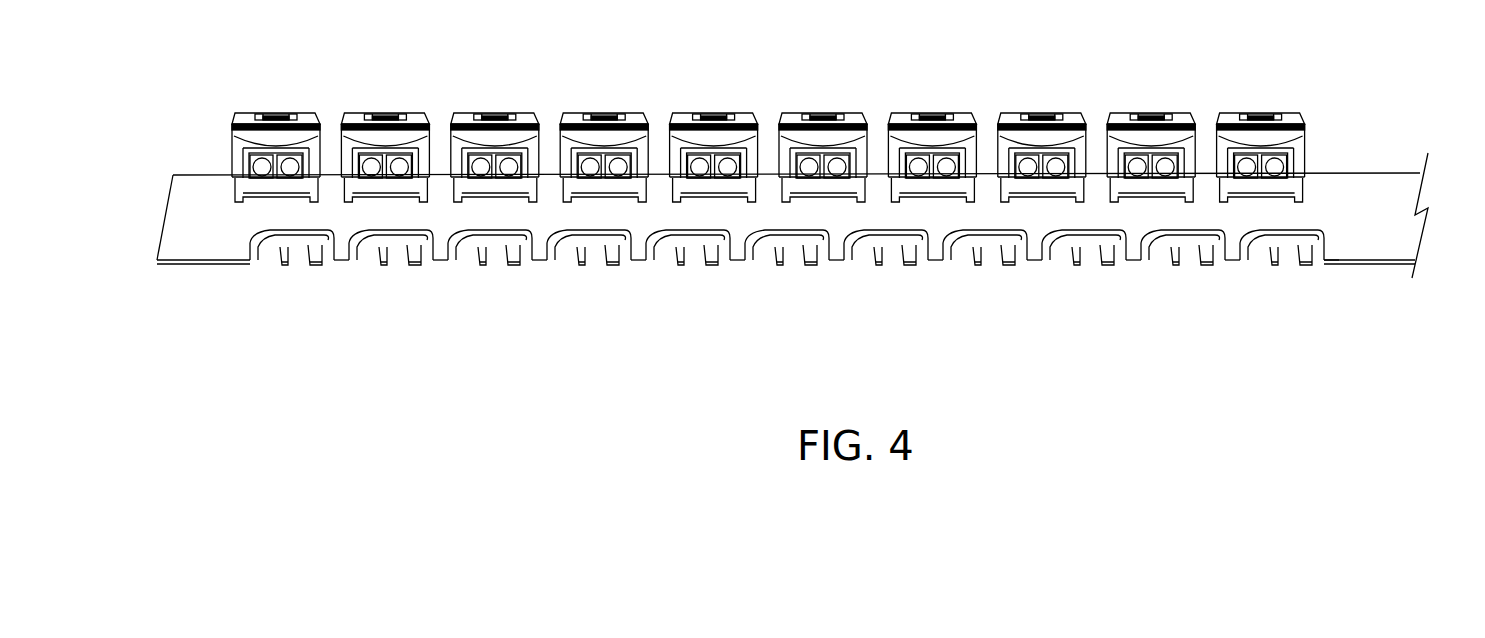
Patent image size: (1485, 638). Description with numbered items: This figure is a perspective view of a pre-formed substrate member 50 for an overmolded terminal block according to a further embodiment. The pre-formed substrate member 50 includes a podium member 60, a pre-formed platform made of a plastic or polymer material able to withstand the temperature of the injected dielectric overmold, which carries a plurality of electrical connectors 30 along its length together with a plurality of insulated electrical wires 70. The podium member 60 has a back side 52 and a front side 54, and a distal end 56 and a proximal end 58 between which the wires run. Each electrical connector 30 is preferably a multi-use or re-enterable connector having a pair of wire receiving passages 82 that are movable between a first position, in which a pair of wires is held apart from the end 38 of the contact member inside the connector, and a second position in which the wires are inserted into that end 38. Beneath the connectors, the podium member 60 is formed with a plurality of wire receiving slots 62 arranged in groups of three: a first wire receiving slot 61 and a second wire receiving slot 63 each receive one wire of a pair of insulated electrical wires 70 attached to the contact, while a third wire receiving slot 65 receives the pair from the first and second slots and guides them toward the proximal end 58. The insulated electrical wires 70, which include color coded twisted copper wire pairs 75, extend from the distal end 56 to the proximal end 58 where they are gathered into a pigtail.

The electrical connector 30 is at (829, 110).
The end of contact member 38 is at (503, 148).
The pre-formed substrate member 50 is at (1320, 106).
The back side 52 is at (216, 276).
The front side 54 is at (213, 173).
The distal end 56 is at (186, 280).
The proximal end 58 is at (1366, 275).
The podium member 60 is at (237, 252).
The first wire receiving slot 61 is at (459, 264).
The wire receiving slots 62 is at (503, 374).
The second wire receiving slot 63 is at (482, 264).
The third wire receiving slot 65 is at (516, 264).
The insulated electrical wires 70 is at (803, 264).
The color coded twisted copper wire pairs 75 is at (910, 250).
The wire receiving passages 82 is at (947, 160).